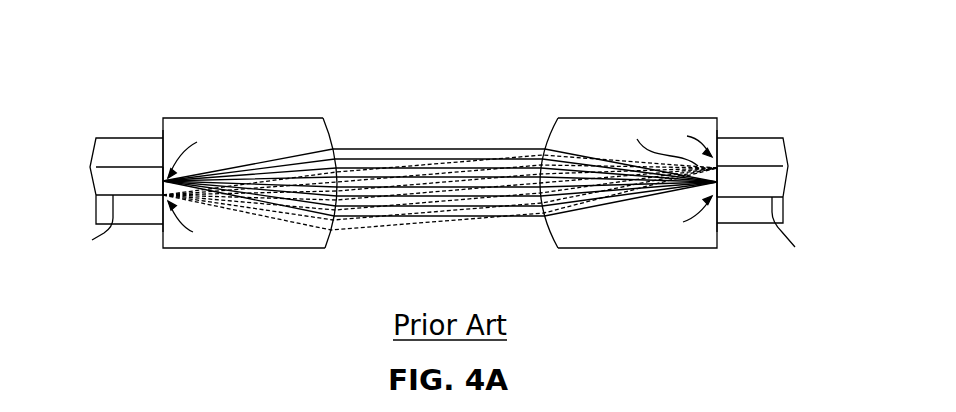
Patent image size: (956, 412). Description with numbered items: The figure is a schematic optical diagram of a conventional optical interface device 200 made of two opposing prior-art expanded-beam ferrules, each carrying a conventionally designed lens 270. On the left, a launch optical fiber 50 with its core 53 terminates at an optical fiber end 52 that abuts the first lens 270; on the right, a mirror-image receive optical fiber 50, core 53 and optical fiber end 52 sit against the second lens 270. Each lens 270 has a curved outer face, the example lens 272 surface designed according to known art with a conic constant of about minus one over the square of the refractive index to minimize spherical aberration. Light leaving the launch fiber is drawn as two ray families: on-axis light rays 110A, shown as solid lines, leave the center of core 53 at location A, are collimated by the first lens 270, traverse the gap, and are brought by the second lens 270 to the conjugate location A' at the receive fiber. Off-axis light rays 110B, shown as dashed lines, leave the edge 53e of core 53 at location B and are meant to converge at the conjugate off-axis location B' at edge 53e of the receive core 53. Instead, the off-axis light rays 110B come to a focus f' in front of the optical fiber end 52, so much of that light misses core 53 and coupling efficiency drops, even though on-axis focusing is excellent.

The conventional optical interface device 200 is at (161, 46).
The optical fiber 50 is at (108, 127).
The optical fiber end 52 is at (163, 139).
The core 53 is at (442, 229).
The edge of core 53e is at (163, 196).
The conventionally designed lens 270 is at (246, 118).
The example lens 272 is at (326, 128).
The on-axis light rays 110A is at (370, 141).
The off-axis light rays 110B is at (372, 237).